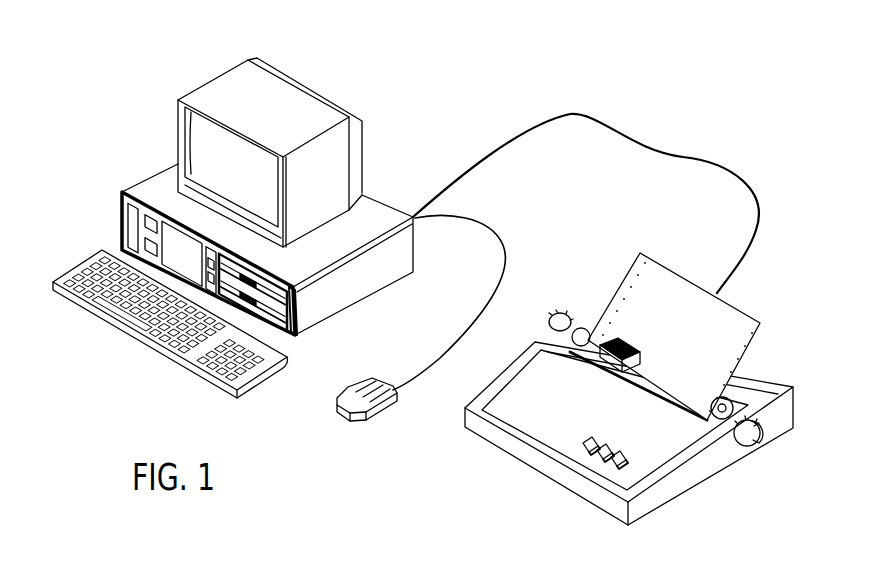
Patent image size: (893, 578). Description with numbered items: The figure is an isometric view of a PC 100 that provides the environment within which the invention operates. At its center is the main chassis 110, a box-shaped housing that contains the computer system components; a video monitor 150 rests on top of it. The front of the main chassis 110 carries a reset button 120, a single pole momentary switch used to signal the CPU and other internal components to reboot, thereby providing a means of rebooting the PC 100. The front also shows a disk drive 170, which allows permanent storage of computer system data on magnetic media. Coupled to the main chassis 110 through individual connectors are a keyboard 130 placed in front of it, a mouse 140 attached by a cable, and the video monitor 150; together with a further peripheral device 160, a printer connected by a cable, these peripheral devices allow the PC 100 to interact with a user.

The PC 100 is at (576, 63).
The main chassis 110 is at (368, 203).
The reset button 120 is at (150, 242).
The keyboard 130 is at (70, 272).
The mouse 140 is at (337, 410).
The video monitor 150 is at (232, 80).
The peripheral device 160 is at (696, 473).
The disk drive 170 is at (296, 336).